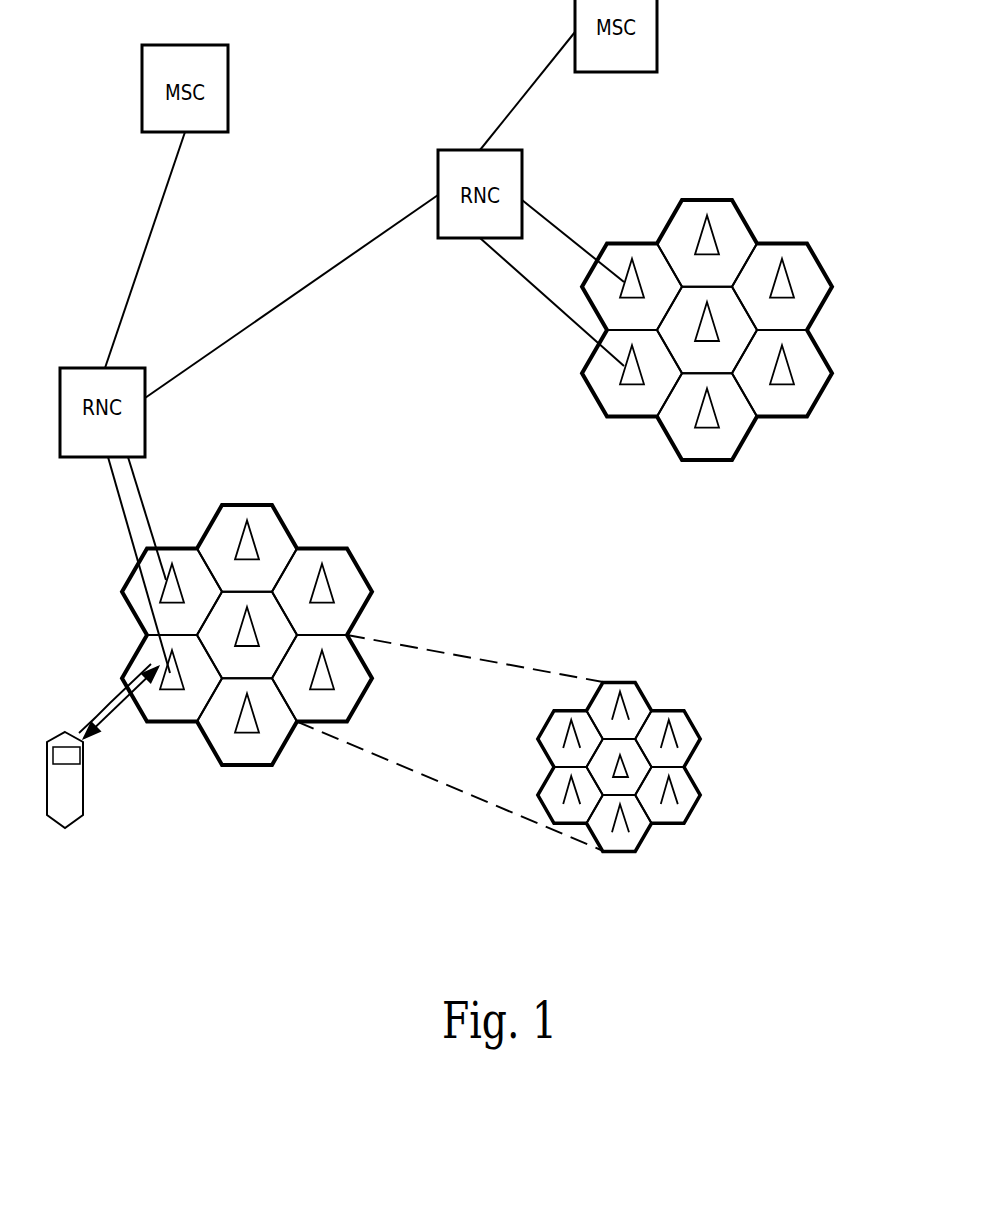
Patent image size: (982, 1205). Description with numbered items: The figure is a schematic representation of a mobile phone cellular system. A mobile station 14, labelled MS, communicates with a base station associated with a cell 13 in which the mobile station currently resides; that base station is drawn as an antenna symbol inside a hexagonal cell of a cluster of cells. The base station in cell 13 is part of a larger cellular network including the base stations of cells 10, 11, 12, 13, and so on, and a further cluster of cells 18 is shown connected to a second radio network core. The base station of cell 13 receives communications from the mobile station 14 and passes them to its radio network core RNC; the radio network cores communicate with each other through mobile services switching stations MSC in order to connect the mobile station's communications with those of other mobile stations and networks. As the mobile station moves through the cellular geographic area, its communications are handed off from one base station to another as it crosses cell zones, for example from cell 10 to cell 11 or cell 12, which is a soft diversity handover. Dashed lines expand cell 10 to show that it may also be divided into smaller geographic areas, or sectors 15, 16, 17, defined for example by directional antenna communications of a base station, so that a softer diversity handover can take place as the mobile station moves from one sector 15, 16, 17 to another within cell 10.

The cell 10 is at (363, 693).
The cell 11 is at (356, 582).
The cell 12 is at (242, 668).
The cell 13 is at (173, 713).
The mobile station 14 is at (85, 807).
The sector 15 is at (683, 753).
The sector 16 is at (683, 813).
The sector 17 is at (640, 837).
The cell cluster 18 is at (838, 250).